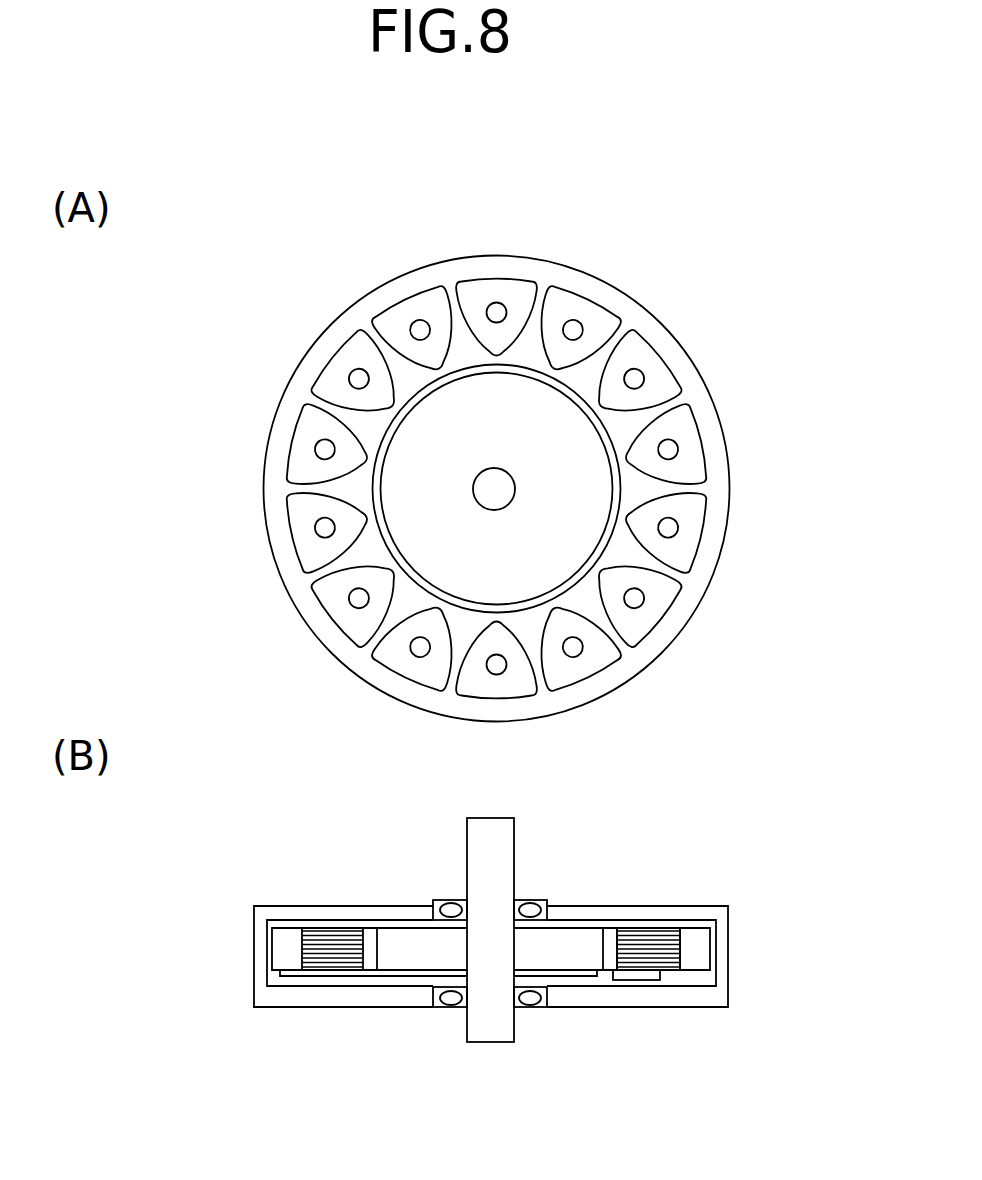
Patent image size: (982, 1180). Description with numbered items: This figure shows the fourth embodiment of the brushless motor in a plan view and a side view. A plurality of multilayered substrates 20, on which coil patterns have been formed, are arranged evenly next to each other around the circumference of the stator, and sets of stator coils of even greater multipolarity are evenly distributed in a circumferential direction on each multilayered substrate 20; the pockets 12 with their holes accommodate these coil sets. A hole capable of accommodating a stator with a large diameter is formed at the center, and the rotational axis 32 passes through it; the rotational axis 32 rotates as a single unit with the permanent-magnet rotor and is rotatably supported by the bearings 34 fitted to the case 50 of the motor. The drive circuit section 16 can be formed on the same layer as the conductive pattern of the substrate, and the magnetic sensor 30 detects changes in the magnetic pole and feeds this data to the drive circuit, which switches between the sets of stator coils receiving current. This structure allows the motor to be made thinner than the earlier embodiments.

The case 50 is at (620, 292).
The pockets with holes 12 is at (672, 368).
The drive circuit section 16 is at (560, 507).
The rotational axis 32 is at (515, 486).
The bearings 34 is at (532, 1007).
The magnetic sensor 30 is at (638, 980).
The multilayered substrate 20 is at (683, 948).